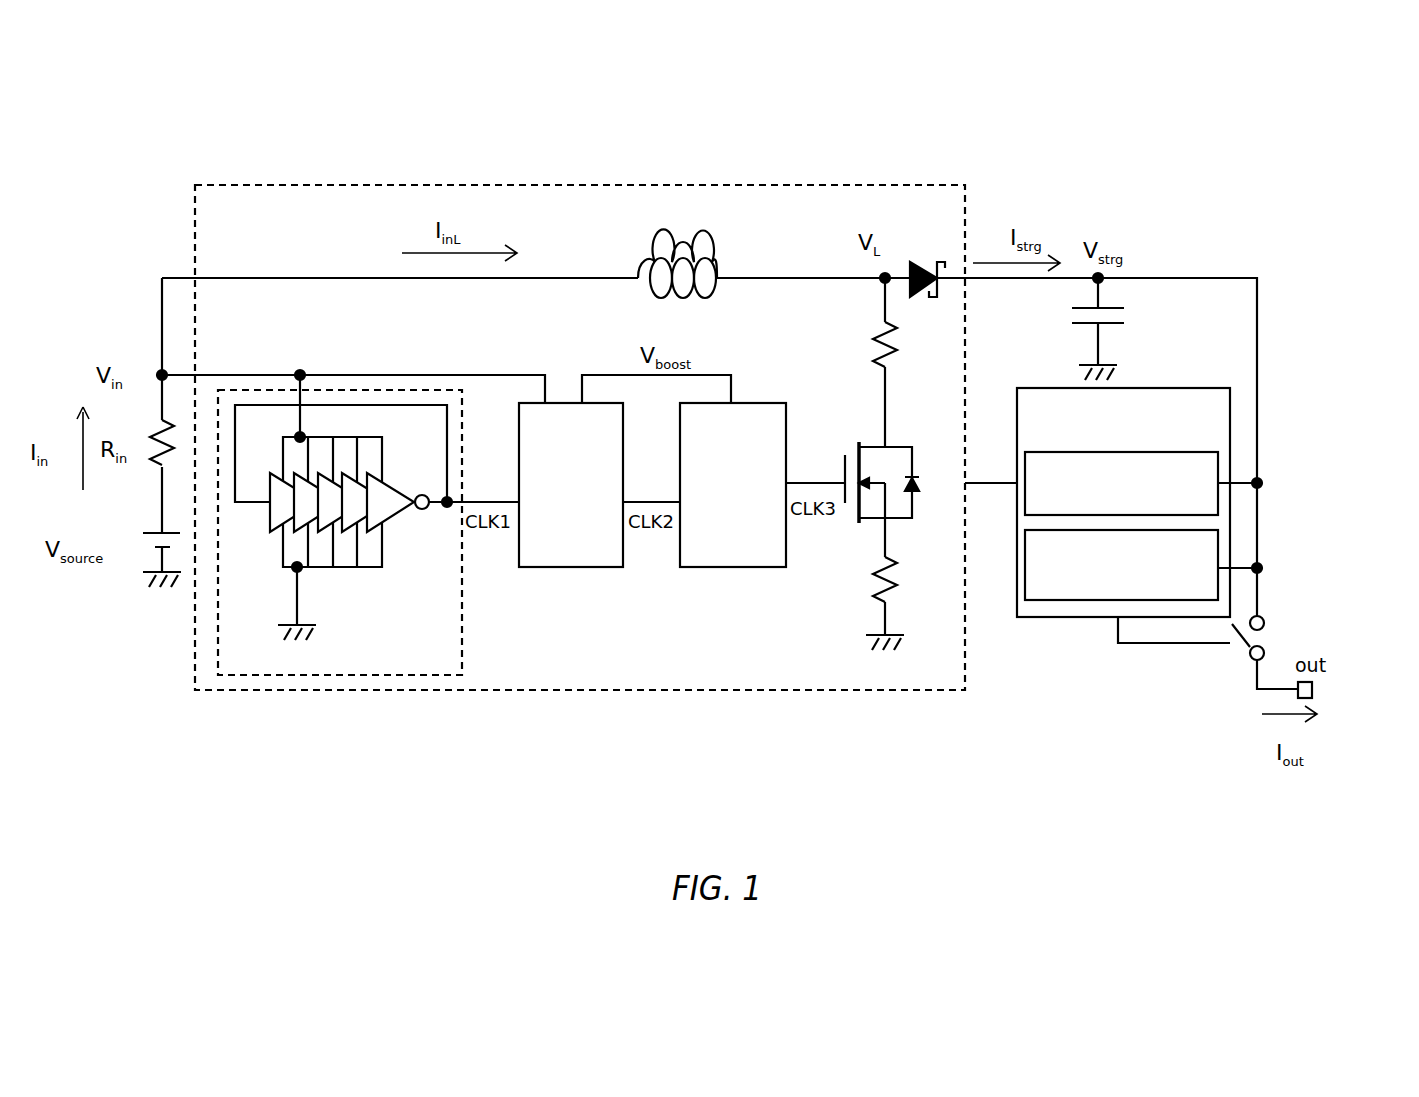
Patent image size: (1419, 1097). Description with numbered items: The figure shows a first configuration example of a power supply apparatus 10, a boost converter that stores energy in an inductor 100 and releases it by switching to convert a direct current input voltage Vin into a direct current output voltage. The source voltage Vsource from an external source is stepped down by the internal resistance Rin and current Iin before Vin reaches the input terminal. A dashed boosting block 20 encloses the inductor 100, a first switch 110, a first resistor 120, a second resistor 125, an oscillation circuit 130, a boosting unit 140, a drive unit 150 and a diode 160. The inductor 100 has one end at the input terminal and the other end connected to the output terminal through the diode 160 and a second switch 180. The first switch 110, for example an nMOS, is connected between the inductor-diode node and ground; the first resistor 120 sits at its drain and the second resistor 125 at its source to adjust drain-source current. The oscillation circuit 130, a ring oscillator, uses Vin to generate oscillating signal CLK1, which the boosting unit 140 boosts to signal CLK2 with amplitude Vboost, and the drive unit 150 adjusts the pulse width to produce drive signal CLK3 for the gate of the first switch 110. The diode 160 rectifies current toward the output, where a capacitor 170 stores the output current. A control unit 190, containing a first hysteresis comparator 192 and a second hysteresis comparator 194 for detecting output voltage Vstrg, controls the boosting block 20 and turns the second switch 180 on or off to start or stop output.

The power supply apparatus 10 is at (1198, 127).
The boosting block 20 is at (400, 185).
The inductor 100 is at (665, 262).
The first switch 110 is at (905, 523).
The first resistor 120 is at (878, 320).
The second resistor 125 is at (880, 595).
The oscillation circuit 130 is at (350, 675).
The boosting unit 140 is at (571, 567).
The drive unit 150 is at (700, 567).
The diode 160 is at (917, 262).
The capacitor 170 is at (1124, 308).
The second switch 180 is at (1265, 625).
The control unit 190 is at (1197, 461).
The first hysteresis comparator 192 is at (1200, 452).
The second hysteresis comparator 194 is at (1220, 550).